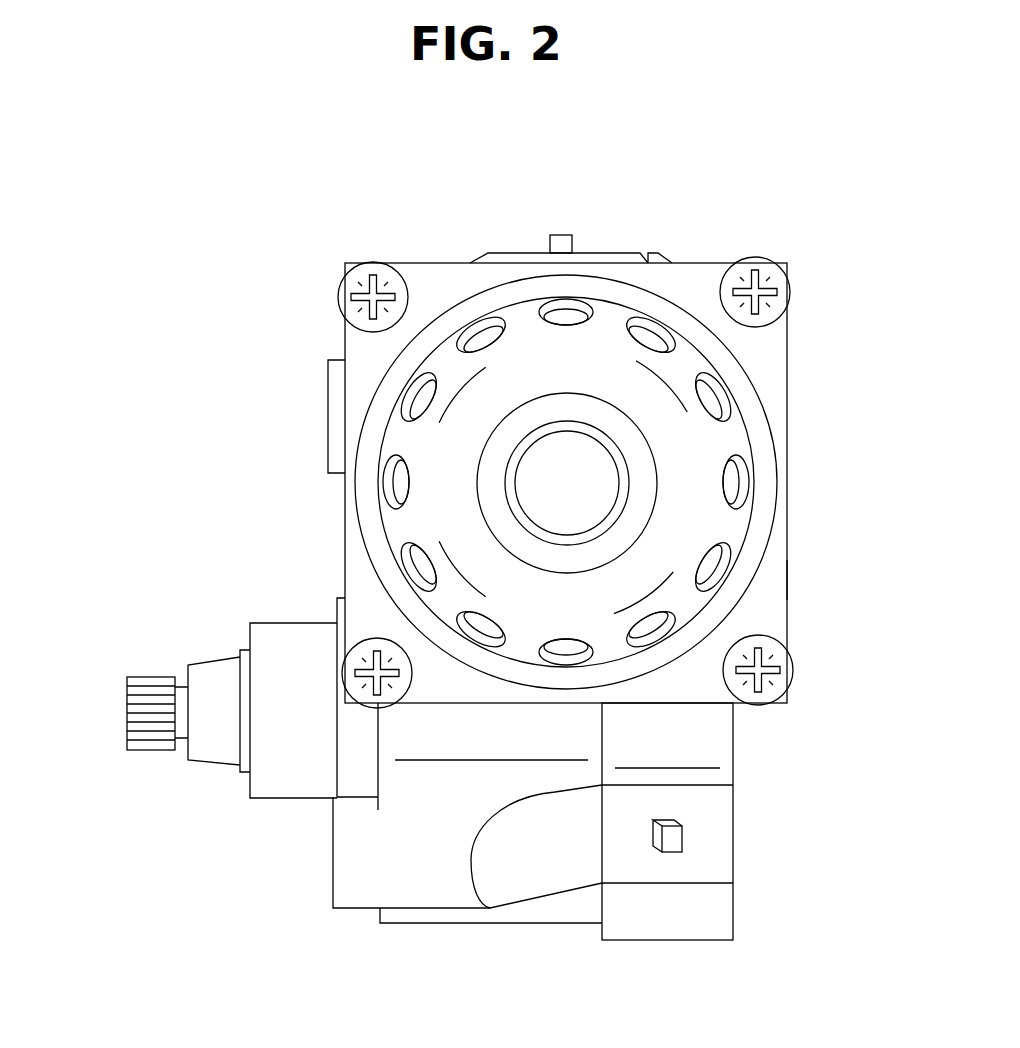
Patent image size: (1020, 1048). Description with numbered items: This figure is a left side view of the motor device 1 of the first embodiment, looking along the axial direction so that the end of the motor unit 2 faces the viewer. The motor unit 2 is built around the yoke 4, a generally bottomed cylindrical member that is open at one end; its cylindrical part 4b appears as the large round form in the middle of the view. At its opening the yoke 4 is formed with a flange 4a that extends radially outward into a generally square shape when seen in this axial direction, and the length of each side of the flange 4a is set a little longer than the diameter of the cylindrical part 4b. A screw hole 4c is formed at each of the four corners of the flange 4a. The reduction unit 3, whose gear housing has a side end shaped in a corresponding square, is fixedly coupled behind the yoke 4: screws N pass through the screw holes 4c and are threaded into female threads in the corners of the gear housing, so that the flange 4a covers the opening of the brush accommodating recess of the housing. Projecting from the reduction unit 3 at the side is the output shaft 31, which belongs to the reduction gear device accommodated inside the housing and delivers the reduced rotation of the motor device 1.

The motor device 1 is at (870, 284).
The motor unit 2 is at (463, 298).
The reduction unit 3 is at (738, 778).
The yoke 4 is at (735, 438).
The flange 4a is at (783, 342).
The cylindrical part 4b is at (770, 565).
The screw hole 4c is at (552, 477).
The output shaft 31 is at (137, 708).
The screws N is at (360, 262).